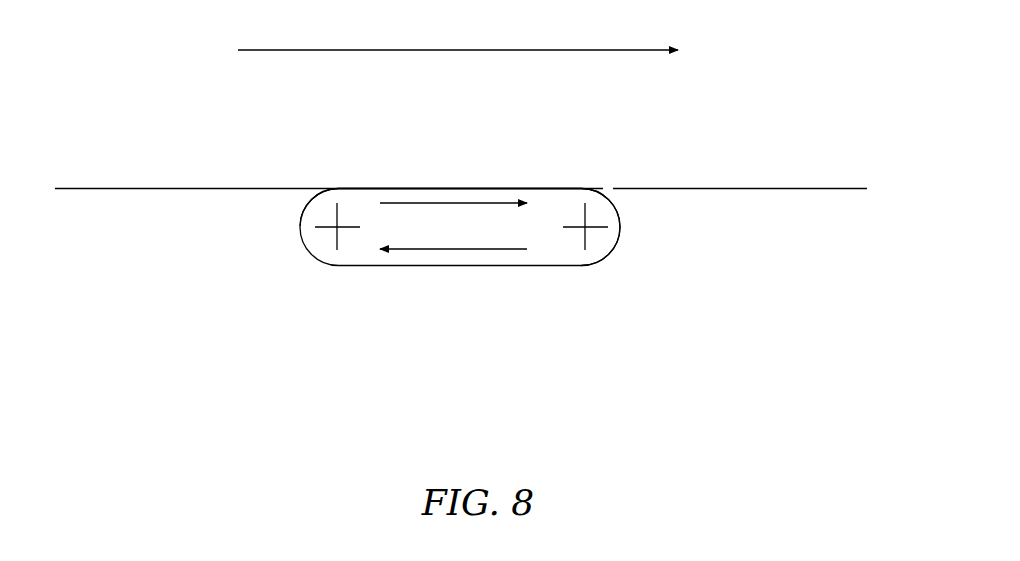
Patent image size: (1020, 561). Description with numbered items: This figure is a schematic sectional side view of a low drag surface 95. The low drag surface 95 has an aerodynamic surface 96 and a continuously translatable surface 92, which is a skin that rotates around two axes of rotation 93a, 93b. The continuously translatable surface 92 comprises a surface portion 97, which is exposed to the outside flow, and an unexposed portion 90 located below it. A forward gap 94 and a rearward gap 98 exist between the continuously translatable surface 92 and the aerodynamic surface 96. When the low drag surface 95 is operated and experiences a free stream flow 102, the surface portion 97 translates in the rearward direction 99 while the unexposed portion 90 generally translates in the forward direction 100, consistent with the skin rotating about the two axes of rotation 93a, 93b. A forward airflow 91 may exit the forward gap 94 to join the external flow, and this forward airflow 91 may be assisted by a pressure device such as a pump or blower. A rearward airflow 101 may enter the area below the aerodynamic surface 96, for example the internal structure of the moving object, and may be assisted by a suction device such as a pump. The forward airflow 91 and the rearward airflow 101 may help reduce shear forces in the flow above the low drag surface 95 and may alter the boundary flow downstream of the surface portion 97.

The unexposed portion 90 is at (462, 266).
The forward airflow 91 is at (305, 193).
The continuously translatable surface 92 is at (622, 228).
The axis of rotation 93a is at (343, 236).
The axis of rotation 93b is at (574, 238).
The forward gap 94 is at (317, 192).
The low drag surface 95 is at (265, 125).
The aerodynamic surface 96 is at (112, 188).
The surface portion 97 is at (452, 188).
The rearward gap 98 is at (607, 188).
The rearward direction 99 is at (453, 215).
The forward direction 100 is at (453, 238).
The rearward airflow 101 is at (617, 195).
The free stream flow 102 is at (458, 39).